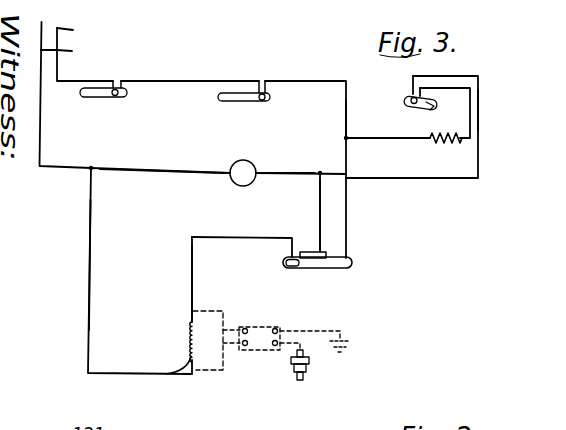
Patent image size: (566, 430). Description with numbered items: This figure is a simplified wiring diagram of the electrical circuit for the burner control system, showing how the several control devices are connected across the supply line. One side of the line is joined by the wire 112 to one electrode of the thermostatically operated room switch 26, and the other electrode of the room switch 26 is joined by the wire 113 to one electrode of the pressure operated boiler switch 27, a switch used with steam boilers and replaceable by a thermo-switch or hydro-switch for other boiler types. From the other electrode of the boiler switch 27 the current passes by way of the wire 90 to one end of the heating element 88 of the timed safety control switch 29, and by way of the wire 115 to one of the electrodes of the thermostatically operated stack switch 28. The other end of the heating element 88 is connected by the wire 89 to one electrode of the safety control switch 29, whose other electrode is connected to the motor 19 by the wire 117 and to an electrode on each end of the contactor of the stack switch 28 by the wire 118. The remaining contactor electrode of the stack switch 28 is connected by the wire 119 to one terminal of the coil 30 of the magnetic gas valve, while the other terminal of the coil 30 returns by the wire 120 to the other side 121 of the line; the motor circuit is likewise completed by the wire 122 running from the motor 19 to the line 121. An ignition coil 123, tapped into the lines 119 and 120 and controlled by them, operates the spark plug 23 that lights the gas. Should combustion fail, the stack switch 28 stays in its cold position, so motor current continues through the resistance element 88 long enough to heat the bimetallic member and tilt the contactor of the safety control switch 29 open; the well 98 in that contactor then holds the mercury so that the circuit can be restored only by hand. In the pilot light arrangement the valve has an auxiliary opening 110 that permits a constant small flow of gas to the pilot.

The wire 112 is at (83, 29).
The other side of the line 121 is at (75, 52).
The room switch 26 is at (98, 91).
The wire 113 is at (203, 80).
The boiler switch 27 is at (228, 98).
The auxiliary opening 110 is at (317, 81).
The safety control switch 29 is at (412, 98).
The well 98 is at (432, 104).
The wire 90 is at (350, 137).
The wire 89 is at (478, 112).
The heating element 88 is at (470, 137).
The wire 115 is at (347, 163).
The motor 19 is at (233, 164).
The wire 117 is at (298, 173).
The wire 122 is at (173, 174).
The wire 118 is at (320, 212).
The wire 120 is at (90, 242).
The stack switch 28 is at (324, 259).
The wire 119 is at (193, 294).
The coil 30 is at (194, 348).
The ignition coil 123 is at (259, 350).
The spark plug 23 is at (309, 372).